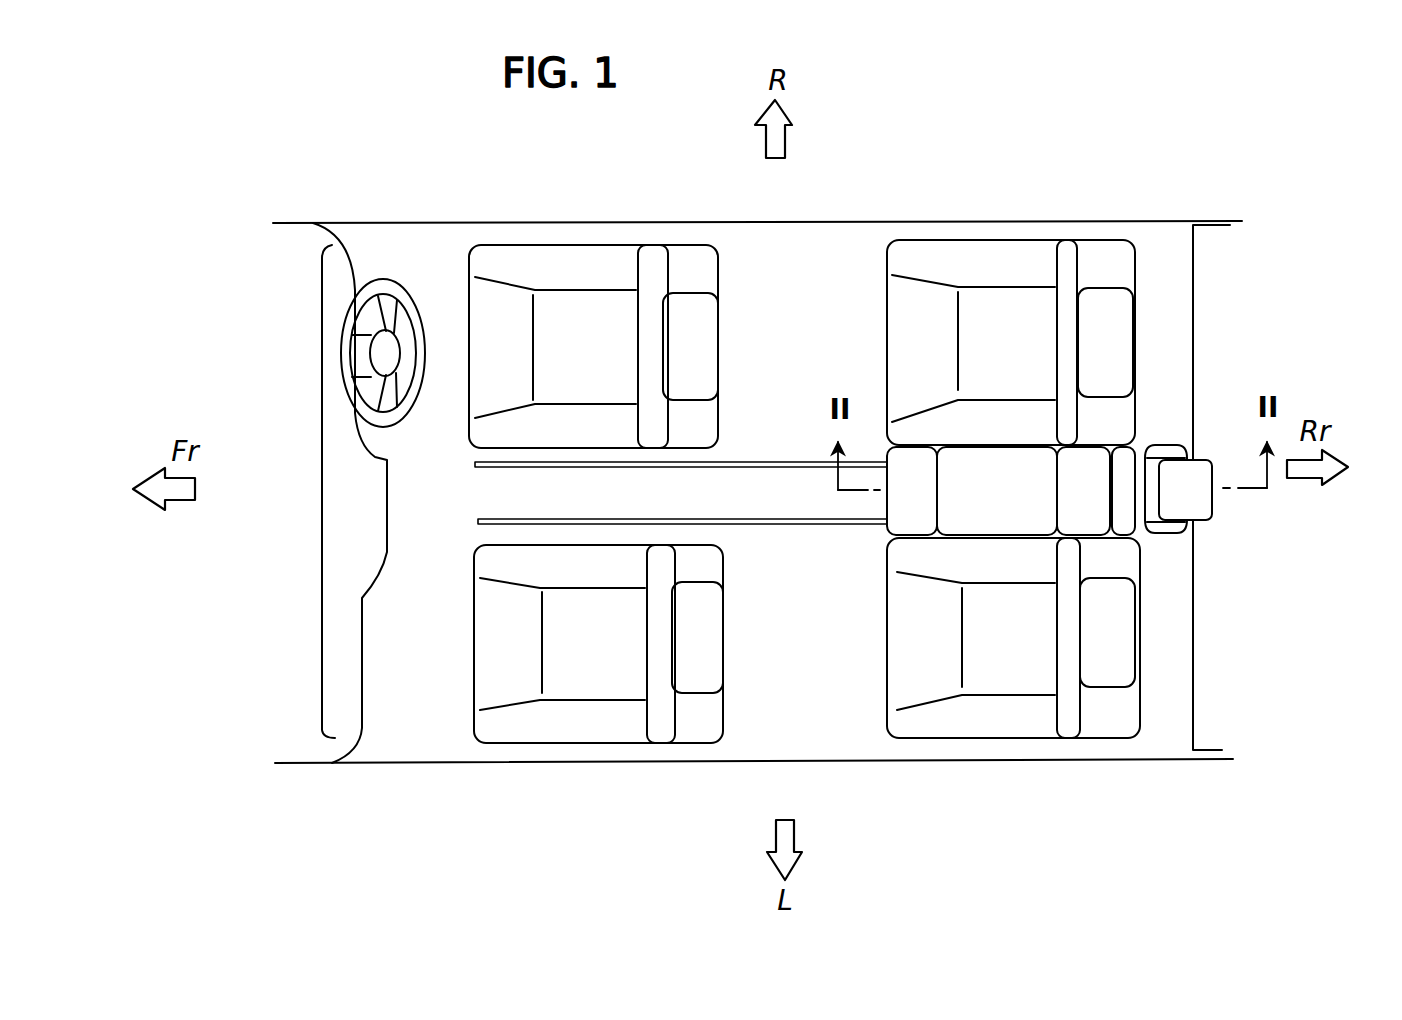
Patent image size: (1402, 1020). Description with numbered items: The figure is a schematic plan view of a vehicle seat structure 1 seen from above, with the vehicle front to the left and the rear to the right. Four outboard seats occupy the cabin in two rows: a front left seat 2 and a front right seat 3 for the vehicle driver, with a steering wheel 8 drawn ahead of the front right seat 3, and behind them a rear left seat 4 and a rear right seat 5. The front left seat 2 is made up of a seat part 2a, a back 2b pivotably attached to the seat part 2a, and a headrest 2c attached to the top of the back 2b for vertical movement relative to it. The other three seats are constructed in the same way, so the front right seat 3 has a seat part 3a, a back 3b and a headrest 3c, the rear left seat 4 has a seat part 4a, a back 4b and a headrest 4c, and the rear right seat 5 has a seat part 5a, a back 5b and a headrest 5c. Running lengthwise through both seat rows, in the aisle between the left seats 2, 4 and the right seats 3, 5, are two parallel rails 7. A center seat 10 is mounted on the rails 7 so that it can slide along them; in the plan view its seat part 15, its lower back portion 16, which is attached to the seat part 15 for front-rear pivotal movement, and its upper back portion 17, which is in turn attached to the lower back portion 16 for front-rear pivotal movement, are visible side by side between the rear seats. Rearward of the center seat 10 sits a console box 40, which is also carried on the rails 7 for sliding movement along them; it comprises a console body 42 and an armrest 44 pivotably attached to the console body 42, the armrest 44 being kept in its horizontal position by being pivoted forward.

The vehicle seat structure 1 is at (396, 110).
The front left seat 2 is at (560, 756).
The seat part 2a is at (605, 745).
The back 2b is at (695, 745).
The headrest 2c is at (702, 698).
The front right seat 3 is at (559, 230).
The seat part 3a is at (612, 245).
The back 3b is at (692, 245).
The headrest 3c is at (700, 292).
The rear left seat 4 is at (984, 755).
The seat part 4a is at (1027, 740).
The back 4b is at (1105, 740).
The headrest 4c is at (1113, 688).
The rear right seat 5 is at (990, 227).
The seat part 5a is at (1028, 242).
The back 5b is at (1097, 242).
The headrest 5c is at (1105, 288).
The rails 7 is at (773, 462).
The steering wheel 8 is at (390, 282).
The center seat 10 is at (882, 500).
The seat part 15 is at (906, 468).
The lower back portion 16 is at (1124, 461).
The upper back portion 17 is at (999, 488).
The console box 40 is at (1170, 545).
The console body 42 is at (1172, 440).
The armrest 44 is at (1213, 503).